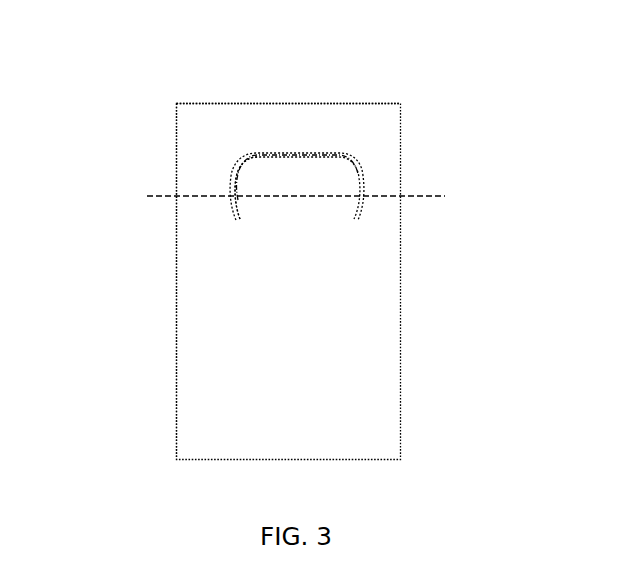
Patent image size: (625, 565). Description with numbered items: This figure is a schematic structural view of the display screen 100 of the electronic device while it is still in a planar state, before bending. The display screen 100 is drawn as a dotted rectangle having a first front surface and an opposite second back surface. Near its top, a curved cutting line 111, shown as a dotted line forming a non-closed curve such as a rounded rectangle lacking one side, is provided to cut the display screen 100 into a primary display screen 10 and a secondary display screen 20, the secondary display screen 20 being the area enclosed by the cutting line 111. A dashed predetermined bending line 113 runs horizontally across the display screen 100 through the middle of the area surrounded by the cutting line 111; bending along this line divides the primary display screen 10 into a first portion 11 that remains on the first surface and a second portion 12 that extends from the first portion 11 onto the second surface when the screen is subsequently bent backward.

The display screen 100 is at (140, 83).
The primary display screen 10 is at (177, 325).
The first portion 11 is at (197, 279).
The second portion 12 is at (283, 132).
The predetermined bending line 113 is at (433, 196).
The secondary display screen 20 is at (293, 185).
The cutting line 111 is at (240, 163).